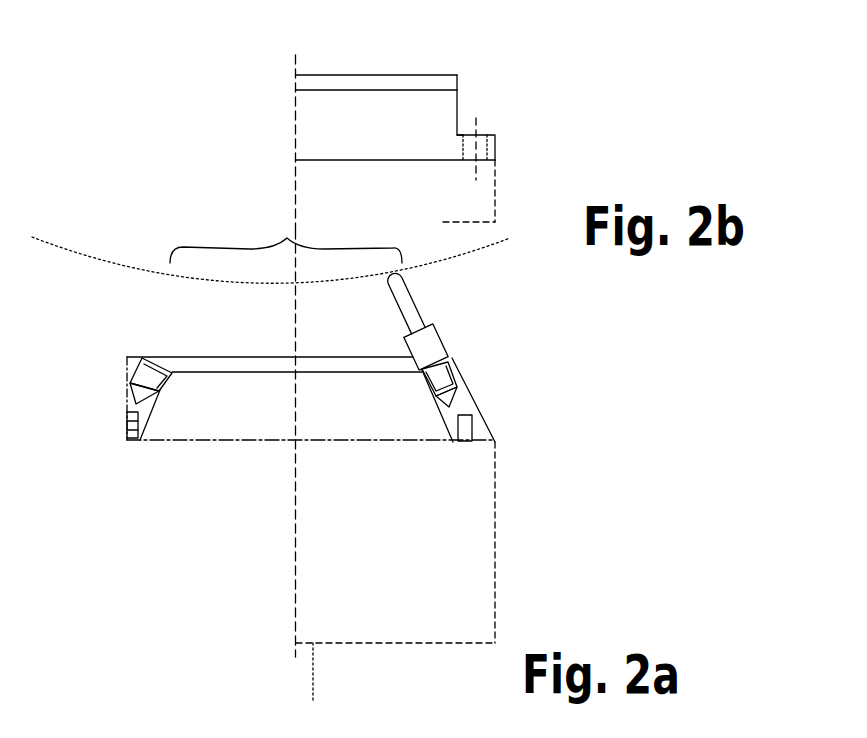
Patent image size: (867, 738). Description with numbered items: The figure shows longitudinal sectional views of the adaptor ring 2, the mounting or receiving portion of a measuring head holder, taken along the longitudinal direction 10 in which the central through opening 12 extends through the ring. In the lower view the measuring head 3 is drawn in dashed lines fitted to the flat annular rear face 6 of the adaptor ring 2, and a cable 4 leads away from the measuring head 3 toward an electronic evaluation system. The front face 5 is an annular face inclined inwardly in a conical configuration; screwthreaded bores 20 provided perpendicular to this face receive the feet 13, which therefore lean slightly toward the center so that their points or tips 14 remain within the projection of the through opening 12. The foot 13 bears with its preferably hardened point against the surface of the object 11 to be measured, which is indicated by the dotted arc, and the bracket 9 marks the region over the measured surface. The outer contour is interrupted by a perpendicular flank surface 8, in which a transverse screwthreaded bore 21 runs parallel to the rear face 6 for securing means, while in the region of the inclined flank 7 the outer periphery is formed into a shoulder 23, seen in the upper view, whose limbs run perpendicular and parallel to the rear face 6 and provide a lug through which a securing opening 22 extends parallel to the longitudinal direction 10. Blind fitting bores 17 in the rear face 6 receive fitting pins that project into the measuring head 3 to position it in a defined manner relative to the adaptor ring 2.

In FIG. 2a, the adaptor ring 2 is at (88, 407).
In FIG. 2b, the measuring head 3 is at (496, 205).
In FIG. 2a, the measuring head 3 is at (496, 573).
In FIG. 2a, the cable 4 is at (314, 675).
In FIG. 2a, the front face 5 is at (330, 358).
In FIG. 2a, the rear face 6 is at (215, 441).
In FIG. 2a, the inclined flank 7 is at (477, 403).
In FIG. 2a, the perpendicular flank surface 8 is at (127, 378).
In FIG. 2a, the machining region 9 is at (286, 234).
In FIG. 2a, the longitudinal direction 10 is at (294, 330).
In FIG. 2a, the object 11 is at (492, 245).
In FIG. 2a, the central through opening 12 is at (333, 428).
In FIG. 2a, the foot 13 is at (431, 337).
In FIG. 2a, the point or tip 14 is at (390, 275).
In FIG. 2a, the fitting bore 17 is at (133, 445).
In FIG. 2a, the screwthreaded bore 20 is at (158, 387).
In FIG. 2a, the transverse screwthreaded bore 21 is at (126, 422).
In FIG. 2b, the securing opening 22 is at (484, 134).
In FIG. 2b, the shoulder 23 is at (458, 134).